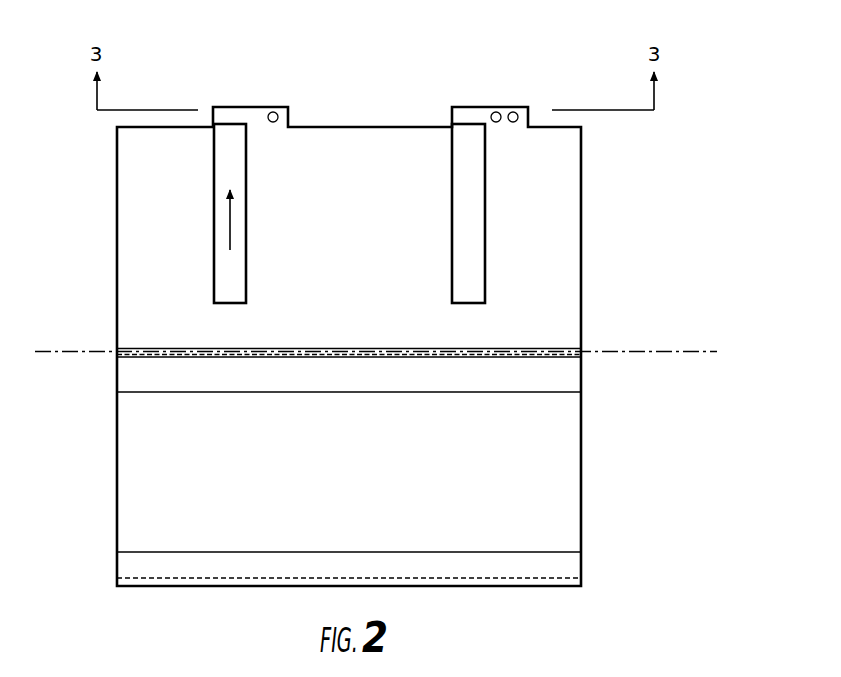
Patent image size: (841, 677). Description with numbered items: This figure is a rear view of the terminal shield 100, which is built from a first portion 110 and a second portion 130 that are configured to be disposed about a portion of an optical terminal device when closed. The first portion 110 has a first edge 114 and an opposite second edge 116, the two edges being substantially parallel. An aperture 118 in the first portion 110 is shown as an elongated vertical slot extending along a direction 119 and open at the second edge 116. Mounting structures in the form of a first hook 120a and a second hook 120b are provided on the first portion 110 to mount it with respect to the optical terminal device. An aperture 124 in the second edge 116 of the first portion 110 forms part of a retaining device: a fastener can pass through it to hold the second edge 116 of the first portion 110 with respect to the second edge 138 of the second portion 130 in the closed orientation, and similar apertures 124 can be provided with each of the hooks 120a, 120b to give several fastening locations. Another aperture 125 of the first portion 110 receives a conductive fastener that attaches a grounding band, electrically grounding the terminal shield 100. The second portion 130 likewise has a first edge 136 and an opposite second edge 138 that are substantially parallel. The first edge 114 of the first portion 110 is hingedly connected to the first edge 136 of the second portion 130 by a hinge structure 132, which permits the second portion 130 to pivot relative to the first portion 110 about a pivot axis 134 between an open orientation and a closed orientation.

The terminal shield 100 is at (626, 252).
The first portion 110 is at (109, 279).
The first edge 114 is at (232, 355).
The second edge 116 is at (333, 127).
The aperture 118 is at (214, 205).
The direction 119 is at (231, 218).
The first hook 120a is at (460, 107).
The second hook 120b is at (225, 107).
The aperture 124 is at (271, 112).
The aperture 125 is at (495, 112).
The second portion 130 is at (109, 489).
The hinge structure 132 is at (538, 353).
The pivot axis 134 is at (668, 352).
The first edge 136 is at (367, 352).
The second edge 138 is at (188, 580).